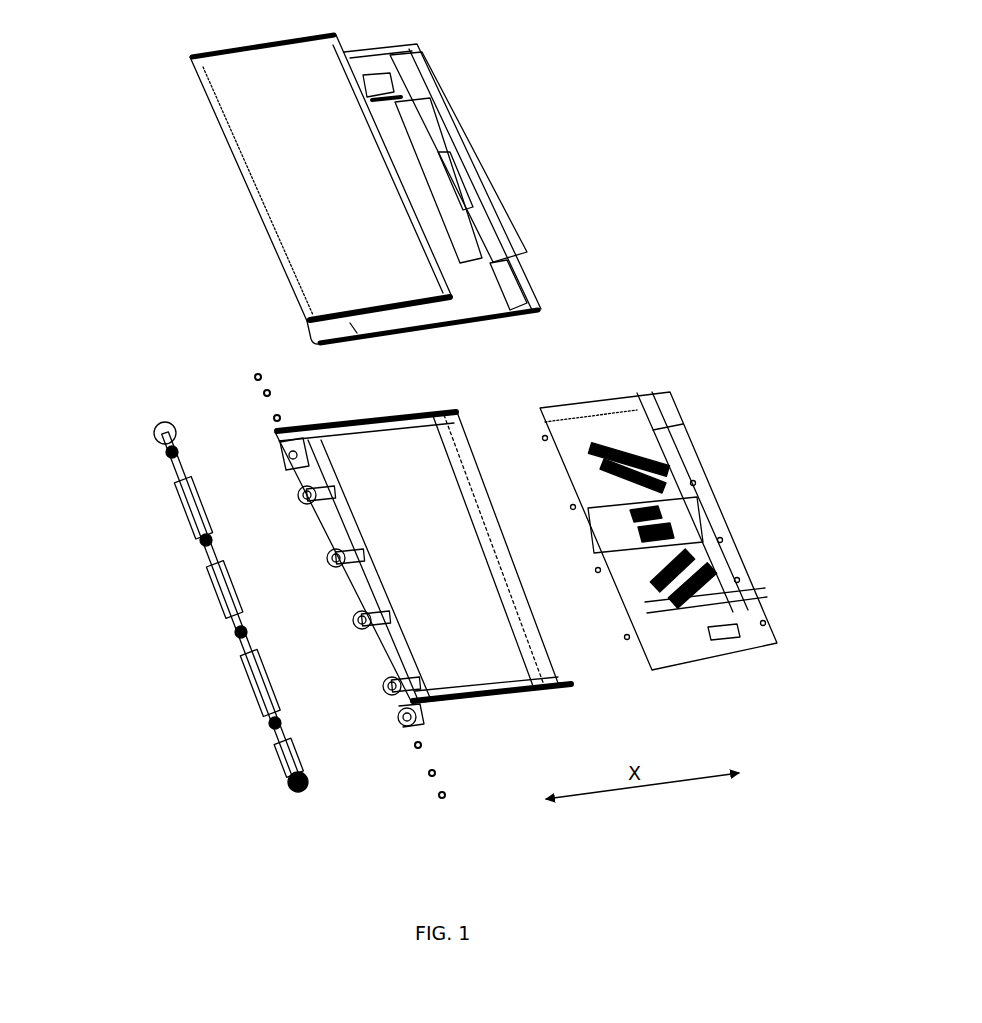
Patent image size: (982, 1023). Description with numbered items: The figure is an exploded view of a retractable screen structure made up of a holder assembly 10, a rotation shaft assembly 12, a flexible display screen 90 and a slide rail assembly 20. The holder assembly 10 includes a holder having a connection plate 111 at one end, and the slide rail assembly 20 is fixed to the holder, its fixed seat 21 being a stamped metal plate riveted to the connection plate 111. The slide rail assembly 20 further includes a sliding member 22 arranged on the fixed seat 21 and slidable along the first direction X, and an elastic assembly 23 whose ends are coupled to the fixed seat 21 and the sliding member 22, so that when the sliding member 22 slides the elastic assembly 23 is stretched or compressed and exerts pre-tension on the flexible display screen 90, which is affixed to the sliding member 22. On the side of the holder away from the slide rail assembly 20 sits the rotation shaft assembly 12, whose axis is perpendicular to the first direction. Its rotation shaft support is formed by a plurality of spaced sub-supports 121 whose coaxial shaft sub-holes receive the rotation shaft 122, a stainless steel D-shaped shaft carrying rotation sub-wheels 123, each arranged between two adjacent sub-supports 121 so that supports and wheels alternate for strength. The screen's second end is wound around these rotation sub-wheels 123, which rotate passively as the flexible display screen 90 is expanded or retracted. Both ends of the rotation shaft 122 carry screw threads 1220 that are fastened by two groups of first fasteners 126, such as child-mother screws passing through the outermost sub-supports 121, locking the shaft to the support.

The flexible display screen 90 is at (280, 162).
The rotation shaft assembly 12 is at (184, 599).
The screw threads 1220 is at (158, 420).
The rotation sub-wheel 123 is at (160, 430).
The rotation shaft 122 is at (243, 643).
The first fasteners 126 is at (262, 394).
The holder assembly 10 is at (391, 629).
The sub-supports 121 is at (307, 477).
The connection plate 111 is at (492, 545).
The slide rail assembly 20 is at (673, 554).
The fixed seat 21 is at (693, 647).
The sliding member 22 is at (730, 575).
The elastic assembly 23 is at (618, 455).